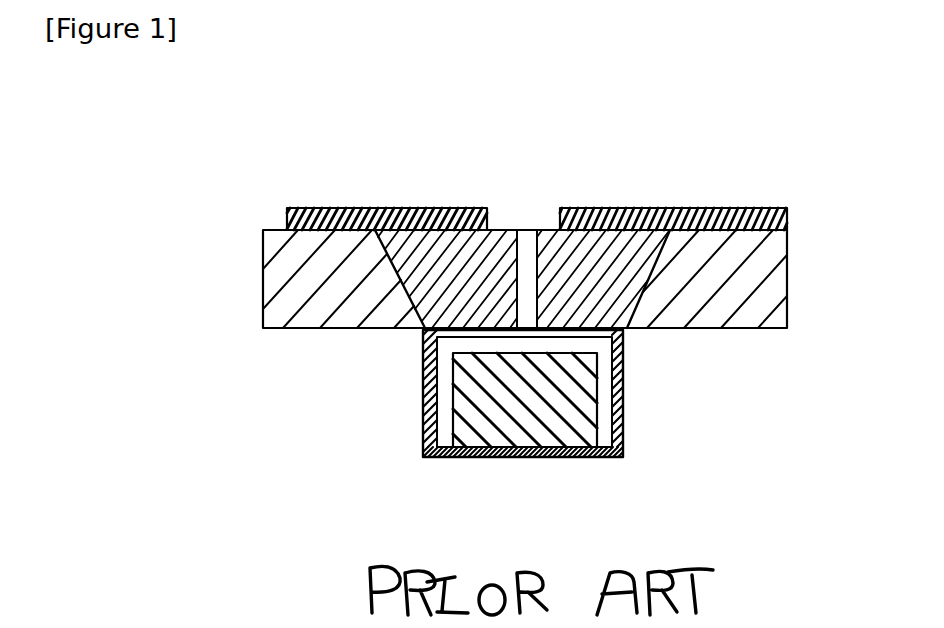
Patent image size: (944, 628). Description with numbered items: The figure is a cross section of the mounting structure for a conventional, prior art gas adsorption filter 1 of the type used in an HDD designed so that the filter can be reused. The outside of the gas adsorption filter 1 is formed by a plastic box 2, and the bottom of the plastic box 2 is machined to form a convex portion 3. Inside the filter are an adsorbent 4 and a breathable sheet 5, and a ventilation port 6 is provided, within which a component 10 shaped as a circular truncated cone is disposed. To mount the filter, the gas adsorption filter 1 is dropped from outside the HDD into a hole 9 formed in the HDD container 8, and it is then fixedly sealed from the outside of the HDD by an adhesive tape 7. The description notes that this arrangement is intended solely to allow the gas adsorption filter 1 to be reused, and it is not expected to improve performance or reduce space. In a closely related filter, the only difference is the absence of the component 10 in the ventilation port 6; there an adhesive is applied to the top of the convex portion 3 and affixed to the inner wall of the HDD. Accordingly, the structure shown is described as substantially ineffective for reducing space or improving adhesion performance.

The gas adsorption filter 1 is at (640, 386).
The plastic box 2 is at (624, 440).
The convex portion 3 is at (624, 410).
The adsorbent 4 is at (527, 415).
The breathable sheet 5 is at (480, 458).
The ventilation port 6 is at (526, 208).
The adhesive tape 7 is at (677, 208).
The HDD container 8 is at (312, 283).
The hole 9 is at (395, 278).
The component shaped as a circular truncated cone 10 is at (612, 292).